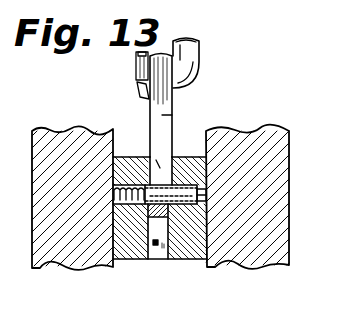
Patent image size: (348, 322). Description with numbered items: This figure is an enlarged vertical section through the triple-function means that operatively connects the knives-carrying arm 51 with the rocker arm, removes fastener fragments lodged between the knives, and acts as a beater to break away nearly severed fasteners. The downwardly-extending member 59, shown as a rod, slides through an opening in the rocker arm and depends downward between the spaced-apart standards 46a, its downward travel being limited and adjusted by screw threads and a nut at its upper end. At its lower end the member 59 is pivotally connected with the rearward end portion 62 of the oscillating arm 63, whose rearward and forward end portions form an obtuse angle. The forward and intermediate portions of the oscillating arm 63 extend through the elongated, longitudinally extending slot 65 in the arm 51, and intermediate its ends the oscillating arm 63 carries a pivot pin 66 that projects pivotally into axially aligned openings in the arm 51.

The standards 46a is at (286, 118).
The downwardly-extending member 59 is at (200, 61).
The rearward end portion 62 is at (172, 115).
The oscillating arm 63 is at (158, 163).
The knives-carrying arm 51 is at (184, 206).
The slot 65 is at (155, 262).
The pivot pin 66 is at (160, 248).